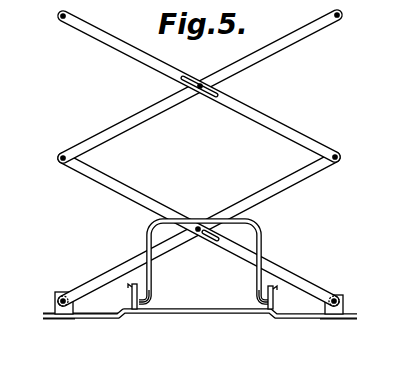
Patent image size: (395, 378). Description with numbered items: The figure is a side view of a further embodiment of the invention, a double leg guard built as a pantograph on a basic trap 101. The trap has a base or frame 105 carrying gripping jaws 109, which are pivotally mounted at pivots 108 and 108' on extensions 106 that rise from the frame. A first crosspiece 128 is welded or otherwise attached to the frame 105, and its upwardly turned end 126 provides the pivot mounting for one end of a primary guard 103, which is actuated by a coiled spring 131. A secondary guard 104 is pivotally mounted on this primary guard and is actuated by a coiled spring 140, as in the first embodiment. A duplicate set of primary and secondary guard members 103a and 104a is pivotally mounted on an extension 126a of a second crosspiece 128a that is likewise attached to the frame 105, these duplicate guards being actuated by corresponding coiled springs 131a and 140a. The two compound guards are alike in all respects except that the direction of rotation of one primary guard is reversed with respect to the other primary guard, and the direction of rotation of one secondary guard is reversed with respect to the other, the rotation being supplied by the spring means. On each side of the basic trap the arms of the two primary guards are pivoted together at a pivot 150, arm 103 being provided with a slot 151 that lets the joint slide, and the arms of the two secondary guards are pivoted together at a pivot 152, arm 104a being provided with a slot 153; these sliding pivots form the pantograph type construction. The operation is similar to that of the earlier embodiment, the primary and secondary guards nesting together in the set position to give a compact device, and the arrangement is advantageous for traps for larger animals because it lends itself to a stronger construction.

The basic trap 101 is at (206, 318).
The primary guard 103 is at (283, 273).
The primary guard member 103a is at (266, 194).
The secondary guard 104 is at (143, 119).
The secondary guard member 104a is at (145, 58).
The base or frame 105 is at (104, 319).
The extension 106 is at (138, 297).
The pivot of gripping jaws 108 is at (164, 285).
The pivot of gripping jaws 108' is at (244, 295).
The gripping jaws 109 is at (260, 237).
The upwardly turned end 126 is at (346, 305).
The extension 126a is at (55, 305).
The crosspiece 128 is at (339, 319).
The second crosspiece 128a is at (65, 319).
The coiled spring 131 is at (326, 298).
The coiled spring 131a is at (69, 295).
The coiled spring 140 is at (338, 153).
The coiled spring 140a is at (63, 155).
The pivot 150 is at (198, 233).
The slot 151 is at (218, 242).
The pivot 152 is at (200, 90).
The slot 153 is at (221, 93).